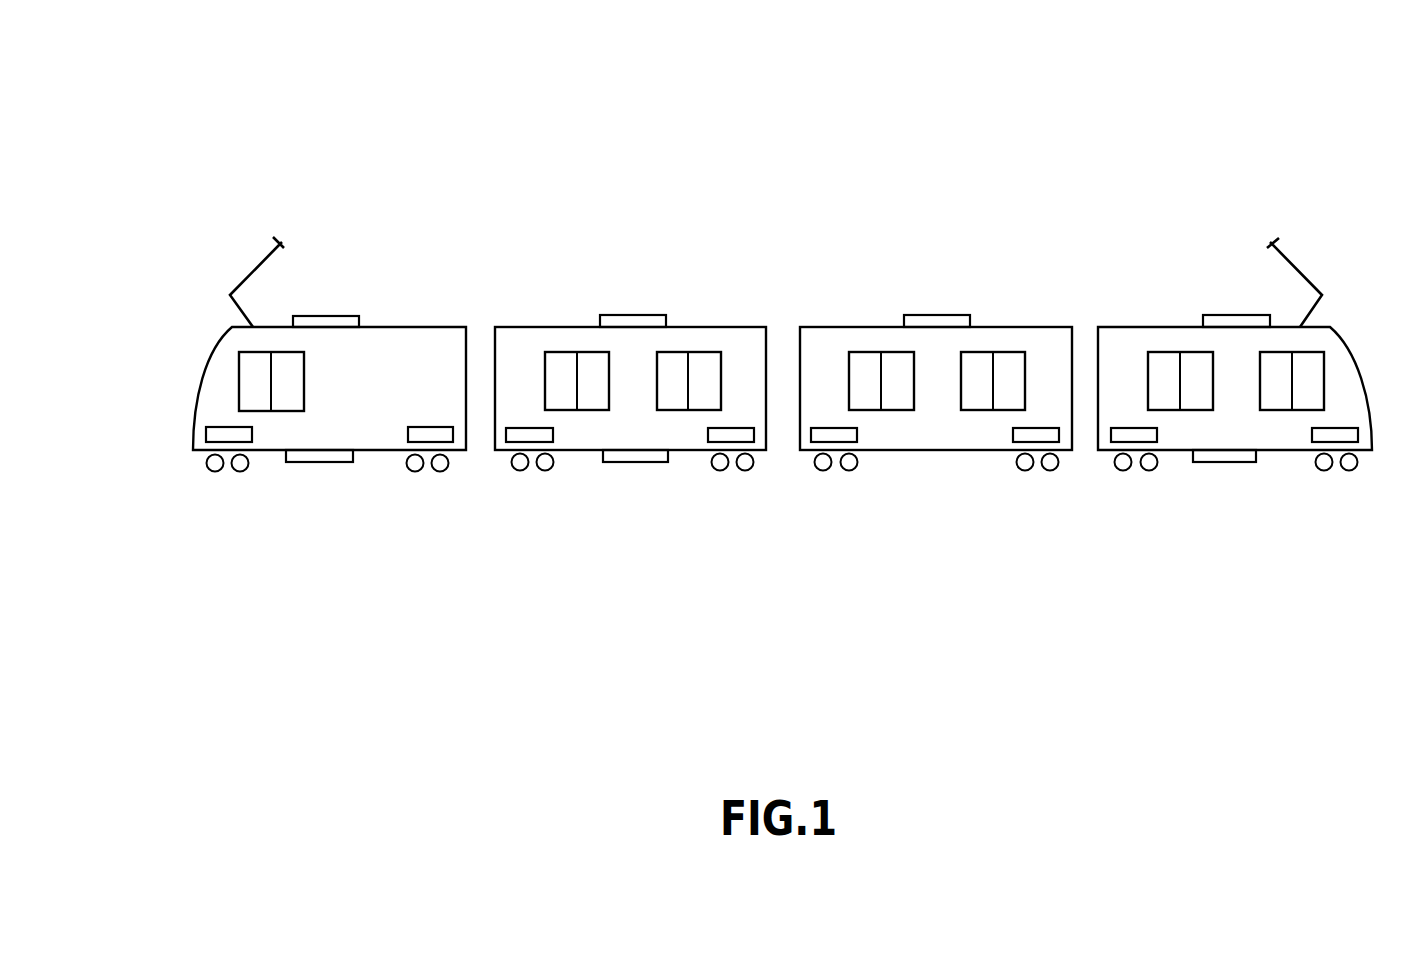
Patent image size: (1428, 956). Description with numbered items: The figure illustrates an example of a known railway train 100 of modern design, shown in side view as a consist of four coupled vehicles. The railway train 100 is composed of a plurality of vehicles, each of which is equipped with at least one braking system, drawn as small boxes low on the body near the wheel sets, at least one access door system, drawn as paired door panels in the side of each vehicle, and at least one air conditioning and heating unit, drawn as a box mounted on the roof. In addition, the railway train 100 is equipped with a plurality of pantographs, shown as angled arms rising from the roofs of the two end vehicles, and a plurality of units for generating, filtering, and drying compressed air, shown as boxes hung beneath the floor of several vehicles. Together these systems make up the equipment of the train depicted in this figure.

The railway train 100 is at (183, 160).